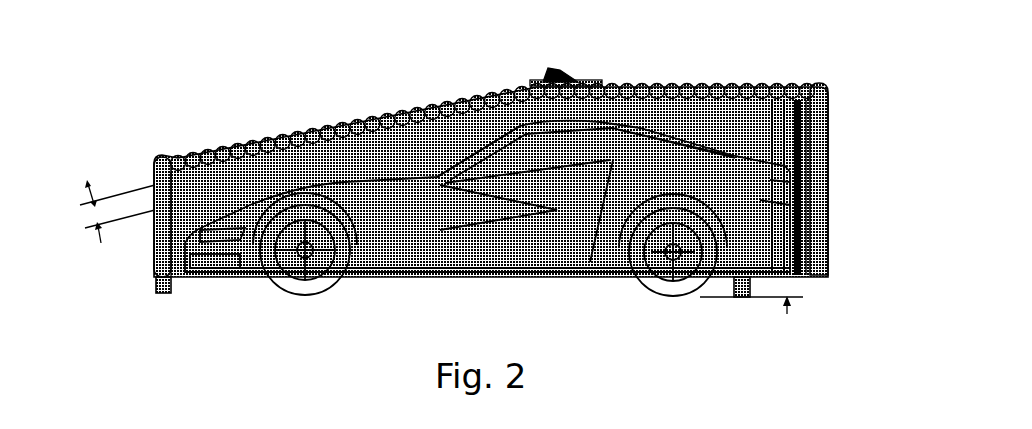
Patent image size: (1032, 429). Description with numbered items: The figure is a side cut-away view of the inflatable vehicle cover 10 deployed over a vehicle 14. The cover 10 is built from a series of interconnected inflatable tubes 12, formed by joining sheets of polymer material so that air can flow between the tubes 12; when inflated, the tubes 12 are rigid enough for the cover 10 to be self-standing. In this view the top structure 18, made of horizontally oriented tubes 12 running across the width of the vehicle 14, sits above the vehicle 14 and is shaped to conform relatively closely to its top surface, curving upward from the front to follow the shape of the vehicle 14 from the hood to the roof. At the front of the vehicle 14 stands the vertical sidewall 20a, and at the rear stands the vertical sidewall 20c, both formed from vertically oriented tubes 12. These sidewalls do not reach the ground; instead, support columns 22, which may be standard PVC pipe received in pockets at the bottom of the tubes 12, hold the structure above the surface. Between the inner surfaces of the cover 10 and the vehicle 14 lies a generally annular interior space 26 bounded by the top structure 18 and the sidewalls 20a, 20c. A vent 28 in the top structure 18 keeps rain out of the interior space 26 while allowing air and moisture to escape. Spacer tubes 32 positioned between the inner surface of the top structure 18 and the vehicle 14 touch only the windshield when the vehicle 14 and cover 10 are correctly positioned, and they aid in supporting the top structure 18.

The inflatable vehicle cover 10 is at (286, 126).
The inflatable tubes 12 is at (203, 156).
The vehicle 14 is at (829, 152).
The top structure 18 is at (669, 83).
The vertical sidewall 20a is at (155, 235).
The vertical sidewall 20c is at (829, 218).
The support columns 22 is at (154, 285).
The interior space 26 is at (108, 194).
The vent 28 is at (555, 68).
The spacer tubes 32 is at (380, 128).